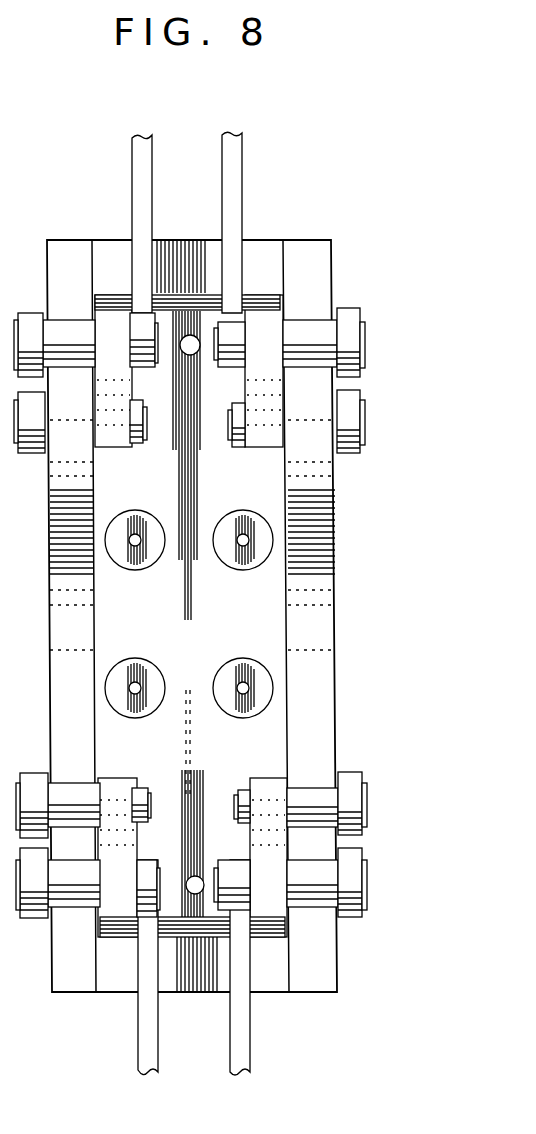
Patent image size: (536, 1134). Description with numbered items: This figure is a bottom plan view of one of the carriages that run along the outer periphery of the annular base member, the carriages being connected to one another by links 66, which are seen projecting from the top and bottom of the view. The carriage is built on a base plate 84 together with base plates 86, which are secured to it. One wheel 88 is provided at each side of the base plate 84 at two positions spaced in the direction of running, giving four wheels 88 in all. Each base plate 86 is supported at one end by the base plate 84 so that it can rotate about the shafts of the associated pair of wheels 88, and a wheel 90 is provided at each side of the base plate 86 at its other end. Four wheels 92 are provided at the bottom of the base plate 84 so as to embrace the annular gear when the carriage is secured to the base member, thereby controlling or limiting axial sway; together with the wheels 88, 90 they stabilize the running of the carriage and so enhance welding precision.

The links 66 is at (243, 151).
The base plate 84 is at (327, 697).
The base plate 86 is at (262, 295).
The wheels 88 is at (352, 394).
The wheels 90 is at (352, 313).
The wheels 92 is at (135, 570).